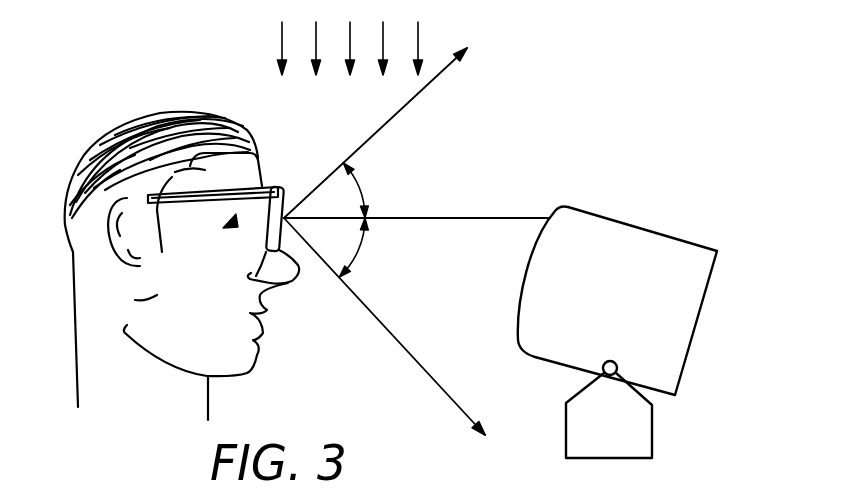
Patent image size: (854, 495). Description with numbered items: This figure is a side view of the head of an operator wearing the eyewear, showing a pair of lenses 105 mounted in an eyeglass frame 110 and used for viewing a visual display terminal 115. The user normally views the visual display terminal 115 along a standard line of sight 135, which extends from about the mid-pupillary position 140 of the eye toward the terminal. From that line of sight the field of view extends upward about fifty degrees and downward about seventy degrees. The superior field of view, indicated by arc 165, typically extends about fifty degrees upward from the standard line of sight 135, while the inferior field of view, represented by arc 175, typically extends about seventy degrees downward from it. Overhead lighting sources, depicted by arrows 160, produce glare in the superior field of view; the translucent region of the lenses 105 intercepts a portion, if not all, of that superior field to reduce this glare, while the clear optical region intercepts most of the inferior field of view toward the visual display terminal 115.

The lenses 105 is at (293, 268).
The eyeglass frame 110 is at (261, 185).
The visual display terminal 115 is at (637, 228).
The standard line of sight 135 is at (480, 218).
The mid-pupillary position 140 is at (238, 222).
The arrows 160 is at (252, 60).
The arc 165 is at (366, 187).
The arc 175 is at (366, 249).